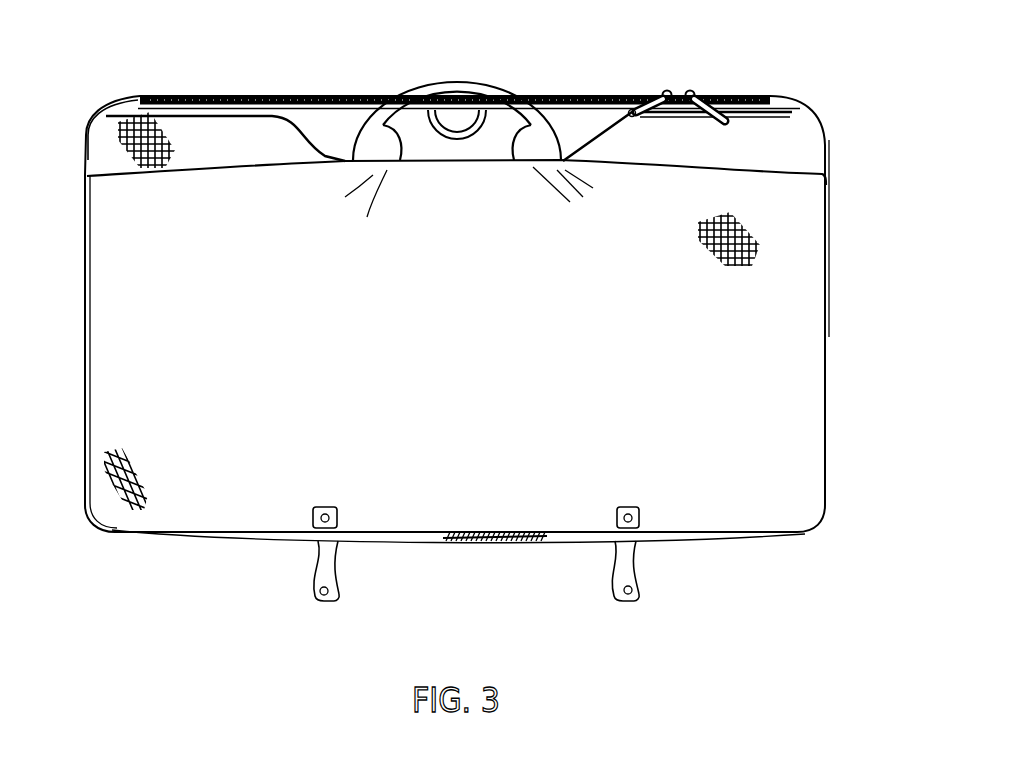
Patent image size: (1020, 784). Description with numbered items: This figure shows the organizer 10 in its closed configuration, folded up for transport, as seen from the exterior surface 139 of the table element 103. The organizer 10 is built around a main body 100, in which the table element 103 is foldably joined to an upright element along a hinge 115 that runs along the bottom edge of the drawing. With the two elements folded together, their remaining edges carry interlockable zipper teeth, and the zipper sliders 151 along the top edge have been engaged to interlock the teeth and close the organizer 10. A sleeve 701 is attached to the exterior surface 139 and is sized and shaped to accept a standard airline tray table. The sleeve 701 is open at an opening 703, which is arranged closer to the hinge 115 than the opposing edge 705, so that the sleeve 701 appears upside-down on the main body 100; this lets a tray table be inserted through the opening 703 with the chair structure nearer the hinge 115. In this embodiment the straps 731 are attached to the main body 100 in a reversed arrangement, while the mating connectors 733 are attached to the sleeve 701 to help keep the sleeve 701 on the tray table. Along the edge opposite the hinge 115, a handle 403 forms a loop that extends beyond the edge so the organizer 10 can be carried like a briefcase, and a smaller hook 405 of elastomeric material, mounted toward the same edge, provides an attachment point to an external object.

The organizer 10 is at (763, 60).
The main body 100 is at (459, 326).
The table element 103 is at (87, 150).
The hinge 115 is at (753, 543).
The exterior surface 139 is at (85, 308).
The zipper slider 151 is at (690, 91).
The handle 403 is at (494, 87).
The hook 405 is at (436, 120).
The sleeve 701 is at (481, 362).
The opening 703 is at (558, 532).
The opposing edge 705 is at (757, 170).
The strap 731 is at (338, 590).
The mating connector 733 is at (326, 507).